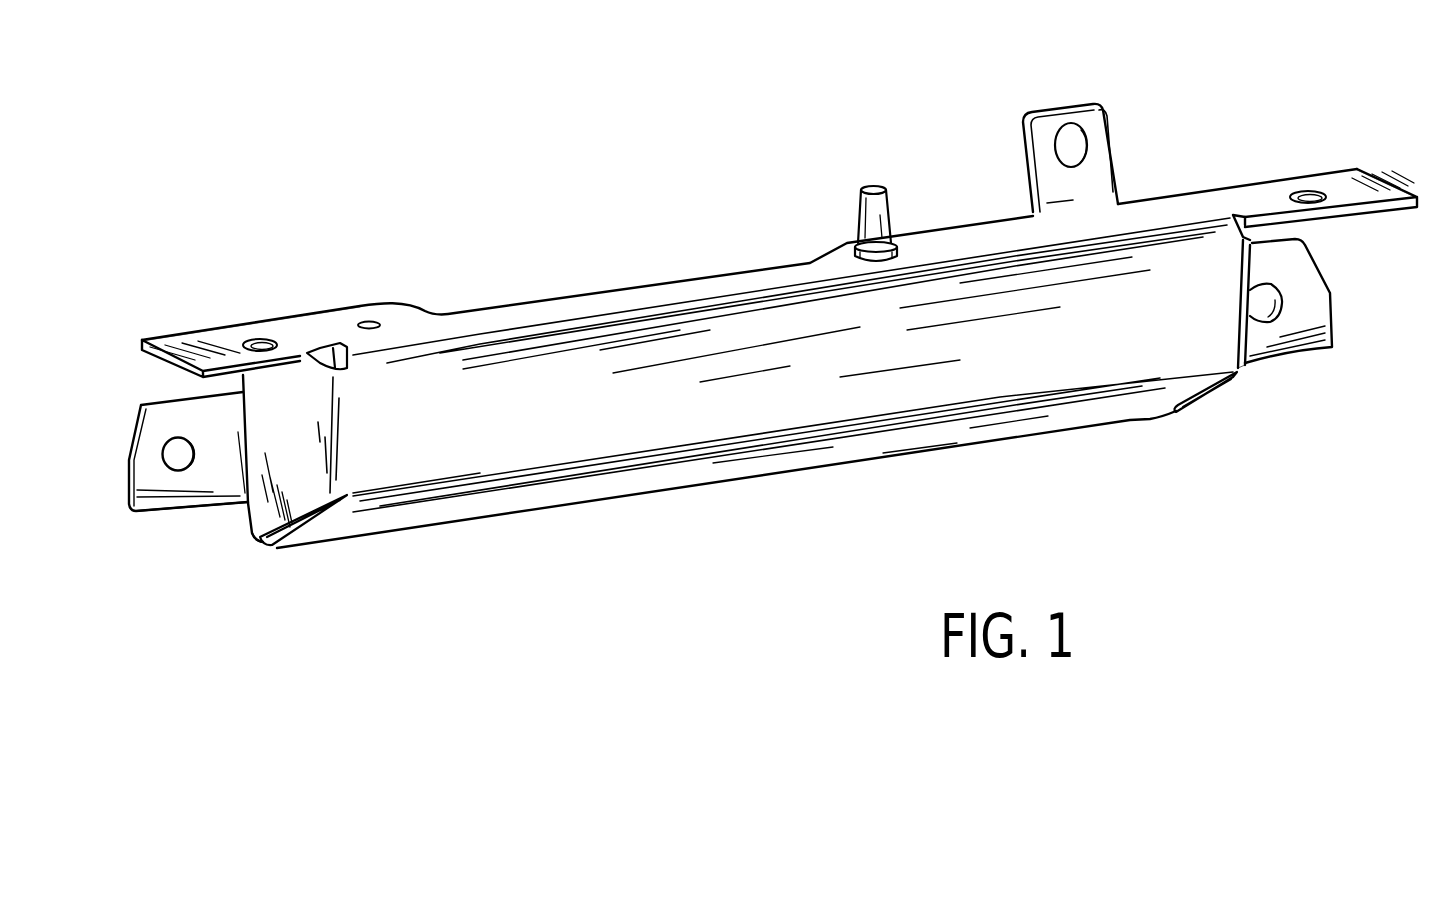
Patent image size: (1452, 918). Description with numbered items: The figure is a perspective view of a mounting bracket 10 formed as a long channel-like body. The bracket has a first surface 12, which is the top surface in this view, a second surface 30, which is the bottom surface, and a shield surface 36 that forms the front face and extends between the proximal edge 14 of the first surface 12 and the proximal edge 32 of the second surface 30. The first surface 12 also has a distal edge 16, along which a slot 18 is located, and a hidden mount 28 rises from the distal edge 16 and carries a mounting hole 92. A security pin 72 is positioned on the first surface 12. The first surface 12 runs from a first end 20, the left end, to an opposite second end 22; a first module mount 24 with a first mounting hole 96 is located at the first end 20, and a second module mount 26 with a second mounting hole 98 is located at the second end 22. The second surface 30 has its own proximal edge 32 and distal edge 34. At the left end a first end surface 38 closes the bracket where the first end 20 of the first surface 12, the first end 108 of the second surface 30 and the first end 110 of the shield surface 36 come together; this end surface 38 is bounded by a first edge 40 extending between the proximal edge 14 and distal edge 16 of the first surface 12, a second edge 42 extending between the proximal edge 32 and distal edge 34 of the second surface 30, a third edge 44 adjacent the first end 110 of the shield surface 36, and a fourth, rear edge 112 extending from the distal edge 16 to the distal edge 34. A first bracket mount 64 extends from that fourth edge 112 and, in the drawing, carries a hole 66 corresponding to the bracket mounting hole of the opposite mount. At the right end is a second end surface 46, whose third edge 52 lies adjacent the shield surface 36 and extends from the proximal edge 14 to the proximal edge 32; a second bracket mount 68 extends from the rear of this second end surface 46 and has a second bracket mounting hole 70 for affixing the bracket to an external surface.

The mounting bracket 10 is at (547, 148).
The first surface 12 is at (975, 222).
The proximal edge of the first surface 14 is at (437, 333).
The distal edge of the first surface 16 is at (497, 305).
The slot 18 is at (718, 235).
The first end of the first surface 20 is at (135, 330).
The second end of the first surface 22 is at (1405, 182).
The first module mount 24 is at (210, 330).
The second module mount 26 is at (1292, 177).
The hidden mount 28 is at (1110, 113).
The second surface 30 is at (437, 525).
The proximal edge of the second surface 32 is at (792, 433).
The distal edge of the second surface 34 is at (857, 465).
The shield surface 36 is at (687, 380).
The first end surface 38 is at (263, 431).
The first edge of the first end surface 40 is at (293, 369).
The second edge of the first end surface 42 is at (260, 543).
The third edge of the first end surface 44 is at (320, 450).
The second end surface 46 is at (1270, 365).
The third edge of the second end surface 52 is at (1247, 375).
The first bracket mount 64 is at (150, 517).
The first bracket hole 66 is at (177, 450).
The second bracket mount 68 is at (1337, 333).
The second bracket mounting hole 70 is at (1270, 302).
The security pin 72 is at (874, 186).
The mounting hole 92 is at (1068, 140).
The first mounting hole 96 is at (262, 345).
The second mounting hole 98 is at (1315, 197).
The first end of the second surface 108 is at (290, 547).
The first end of the shield surface 110 is at (348, 477).
The fourth edge 112 is at (243, 507).